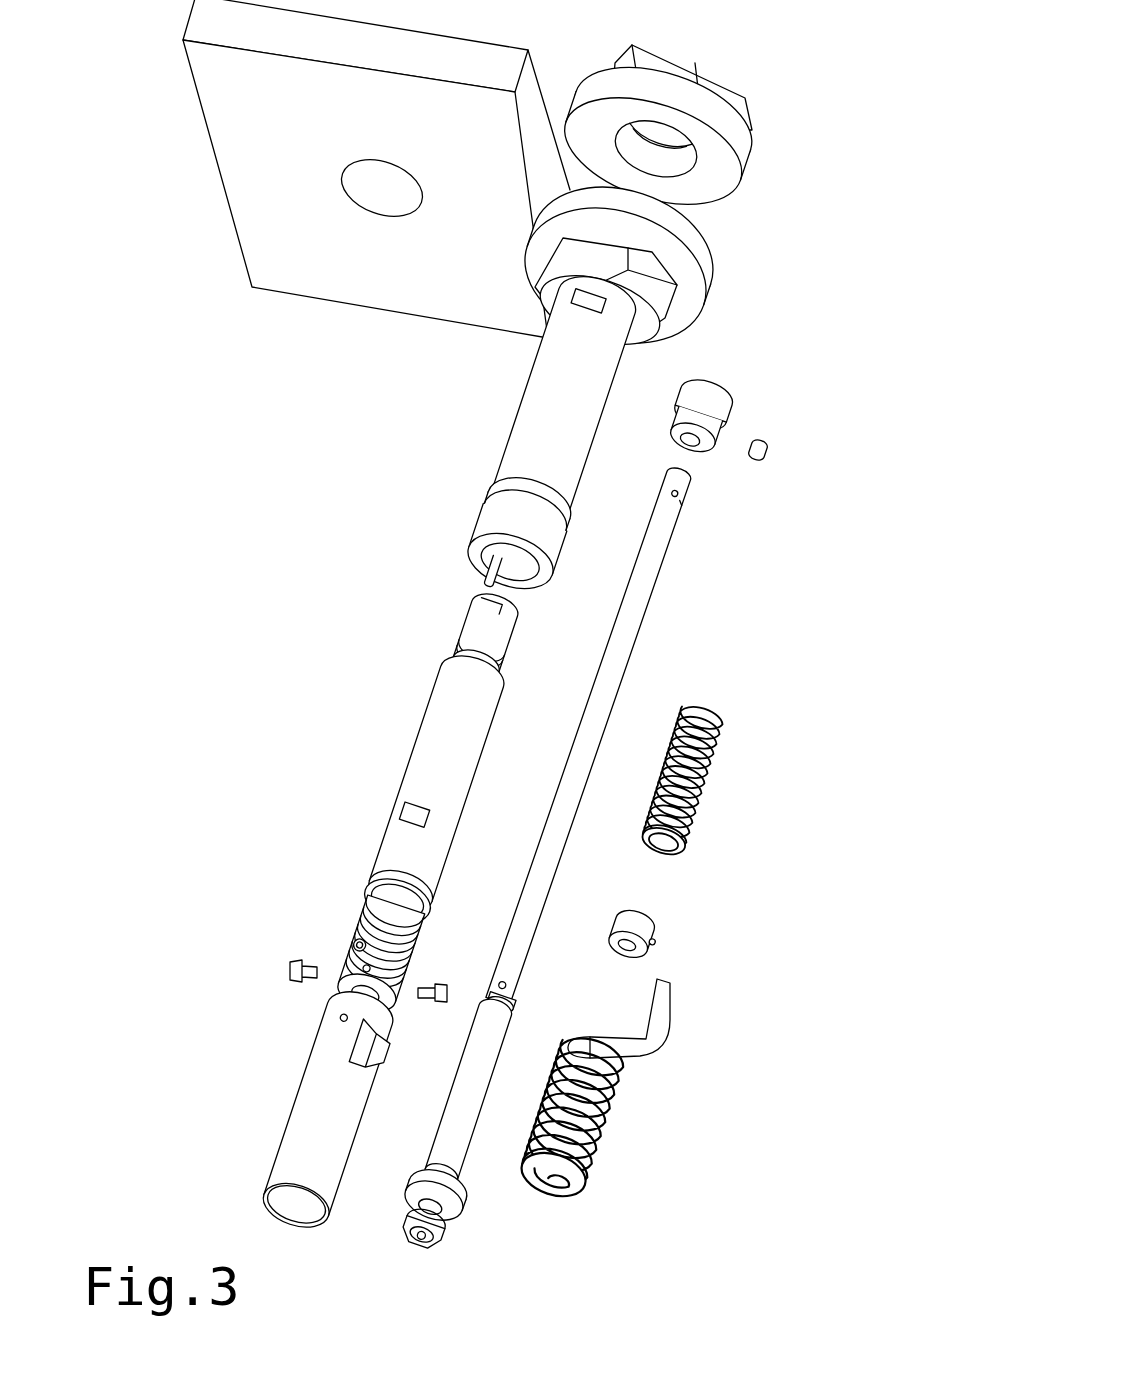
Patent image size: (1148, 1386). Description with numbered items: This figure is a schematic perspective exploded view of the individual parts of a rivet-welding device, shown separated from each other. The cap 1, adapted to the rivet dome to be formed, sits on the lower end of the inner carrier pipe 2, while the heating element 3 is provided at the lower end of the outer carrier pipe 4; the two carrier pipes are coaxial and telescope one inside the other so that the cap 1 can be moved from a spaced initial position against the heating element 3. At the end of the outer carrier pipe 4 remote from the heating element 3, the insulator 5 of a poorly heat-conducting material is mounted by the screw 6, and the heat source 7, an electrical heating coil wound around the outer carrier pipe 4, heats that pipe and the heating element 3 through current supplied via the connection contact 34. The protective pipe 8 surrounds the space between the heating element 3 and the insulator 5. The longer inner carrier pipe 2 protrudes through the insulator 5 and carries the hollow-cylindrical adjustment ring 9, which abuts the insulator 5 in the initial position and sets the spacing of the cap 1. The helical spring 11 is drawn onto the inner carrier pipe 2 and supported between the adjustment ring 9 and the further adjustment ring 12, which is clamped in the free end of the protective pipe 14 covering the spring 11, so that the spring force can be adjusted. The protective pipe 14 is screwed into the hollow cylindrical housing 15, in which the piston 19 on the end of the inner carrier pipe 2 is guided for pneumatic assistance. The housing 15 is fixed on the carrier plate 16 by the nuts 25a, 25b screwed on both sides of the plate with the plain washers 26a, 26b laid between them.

The cap 1 is at (632, 1231).
The carrier pipe 2 is at (676, 740).
The heating element 3 is at (348, 1209).
The carrier pipe 4 is at (640, 1092).
The insulator 5 is at (327, 926).
The screw 6 is at (267, 947).
The heat source 7 is at (689, 1117).
The protective pipe 8 is at (308, 1110).
The adjustment ring 9 is at (732, 940).
The spring 11 is at (749, 780).
The adjustment ring 12 is at (362, 620).
The protective pipe 14 is at (358, 783).
The housing 15 is at (424, 435).
The carrier plate 16 is at (376, 195).
The piston 19 is at (766, 412).
The nut 25a is at (741, 78).
The nut 25b is at (705, 298).
The plain washer 26a is at (714, 136).
The plain washer 26b is at (691, 265).
The connection contact 34 is at (717, 1018).